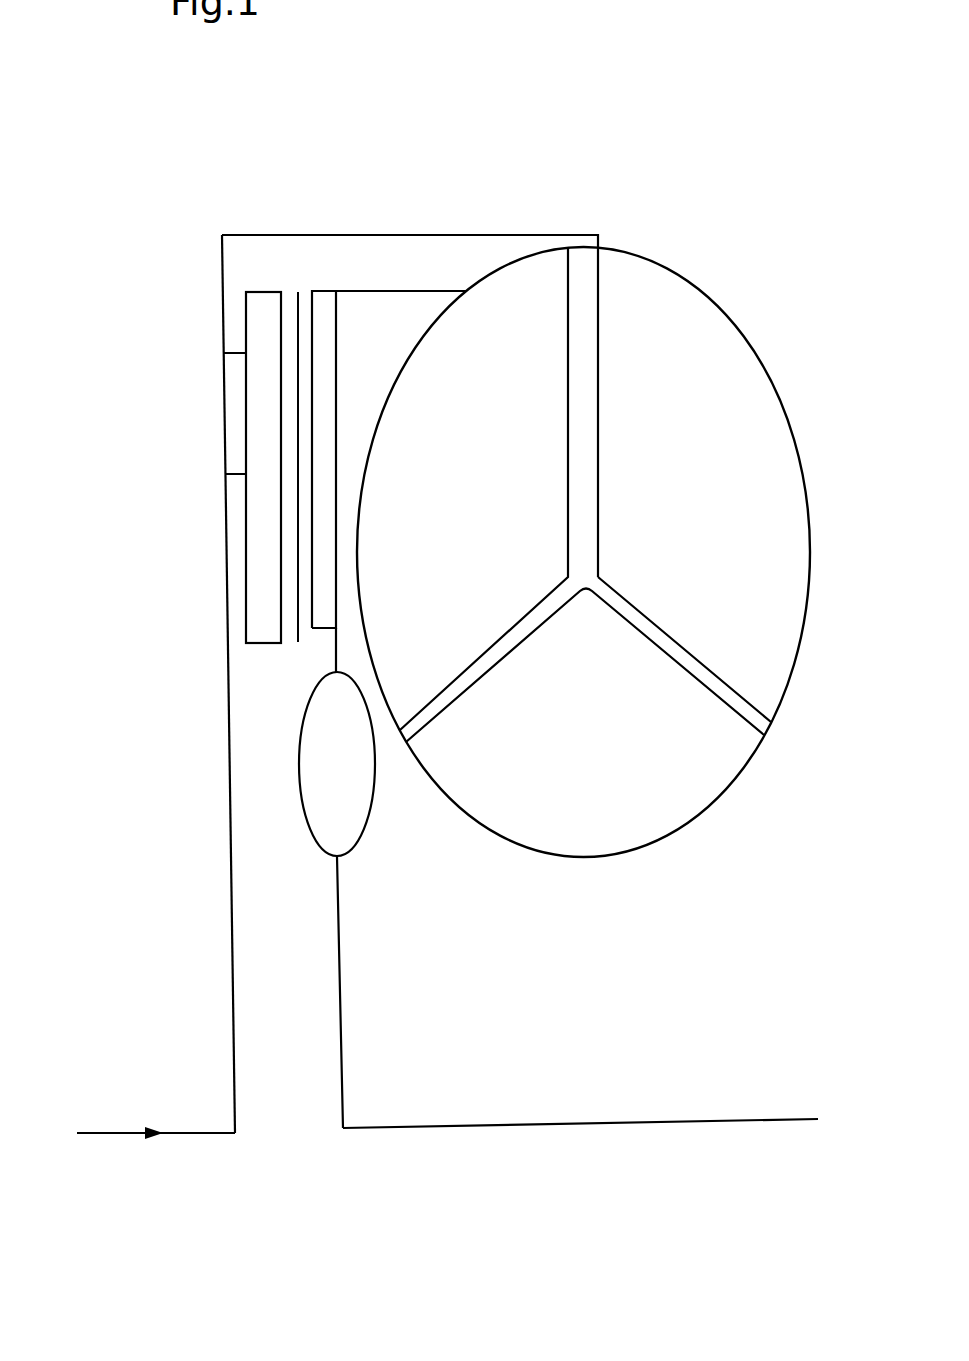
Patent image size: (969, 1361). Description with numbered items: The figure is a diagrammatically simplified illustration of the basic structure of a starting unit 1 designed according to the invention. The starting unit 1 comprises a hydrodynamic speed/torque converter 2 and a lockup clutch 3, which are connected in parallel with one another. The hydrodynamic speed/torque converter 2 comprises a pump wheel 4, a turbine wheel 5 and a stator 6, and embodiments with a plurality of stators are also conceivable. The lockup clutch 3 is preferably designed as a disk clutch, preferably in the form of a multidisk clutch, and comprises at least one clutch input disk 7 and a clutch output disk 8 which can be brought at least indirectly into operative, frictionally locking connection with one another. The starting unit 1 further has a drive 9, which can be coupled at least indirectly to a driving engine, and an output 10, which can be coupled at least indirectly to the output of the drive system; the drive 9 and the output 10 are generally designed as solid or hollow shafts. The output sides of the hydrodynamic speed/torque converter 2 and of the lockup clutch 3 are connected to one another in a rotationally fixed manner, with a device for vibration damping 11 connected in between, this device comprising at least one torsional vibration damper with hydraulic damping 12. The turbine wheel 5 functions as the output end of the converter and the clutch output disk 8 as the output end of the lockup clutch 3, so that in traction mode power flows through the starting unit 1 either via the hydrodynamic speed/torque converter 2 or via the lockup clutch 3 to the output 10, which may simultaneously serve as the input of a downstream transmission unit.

The starting unit 1 is at (613, 167).
The hydrodynamic speed/torque converter 2 is at (766, 348).
The lockup clutch 3 is at (230, 607).
The pump wheel 4 is at (703, 507).
The turbine wheel 5 is at (459, 526).
The stator 6 is at (581, 757).
The clutch input disk 7 is at (258, 400).
The clutch output disk 8 is at (320, 323).
The drive 9 is at (186, 1133).
The output 10 is at (497, 1128).
The device for vibration damping 11 is at (388, 840).
The torsional vibration damper with hydraulic damping 12 is at (327, 795).